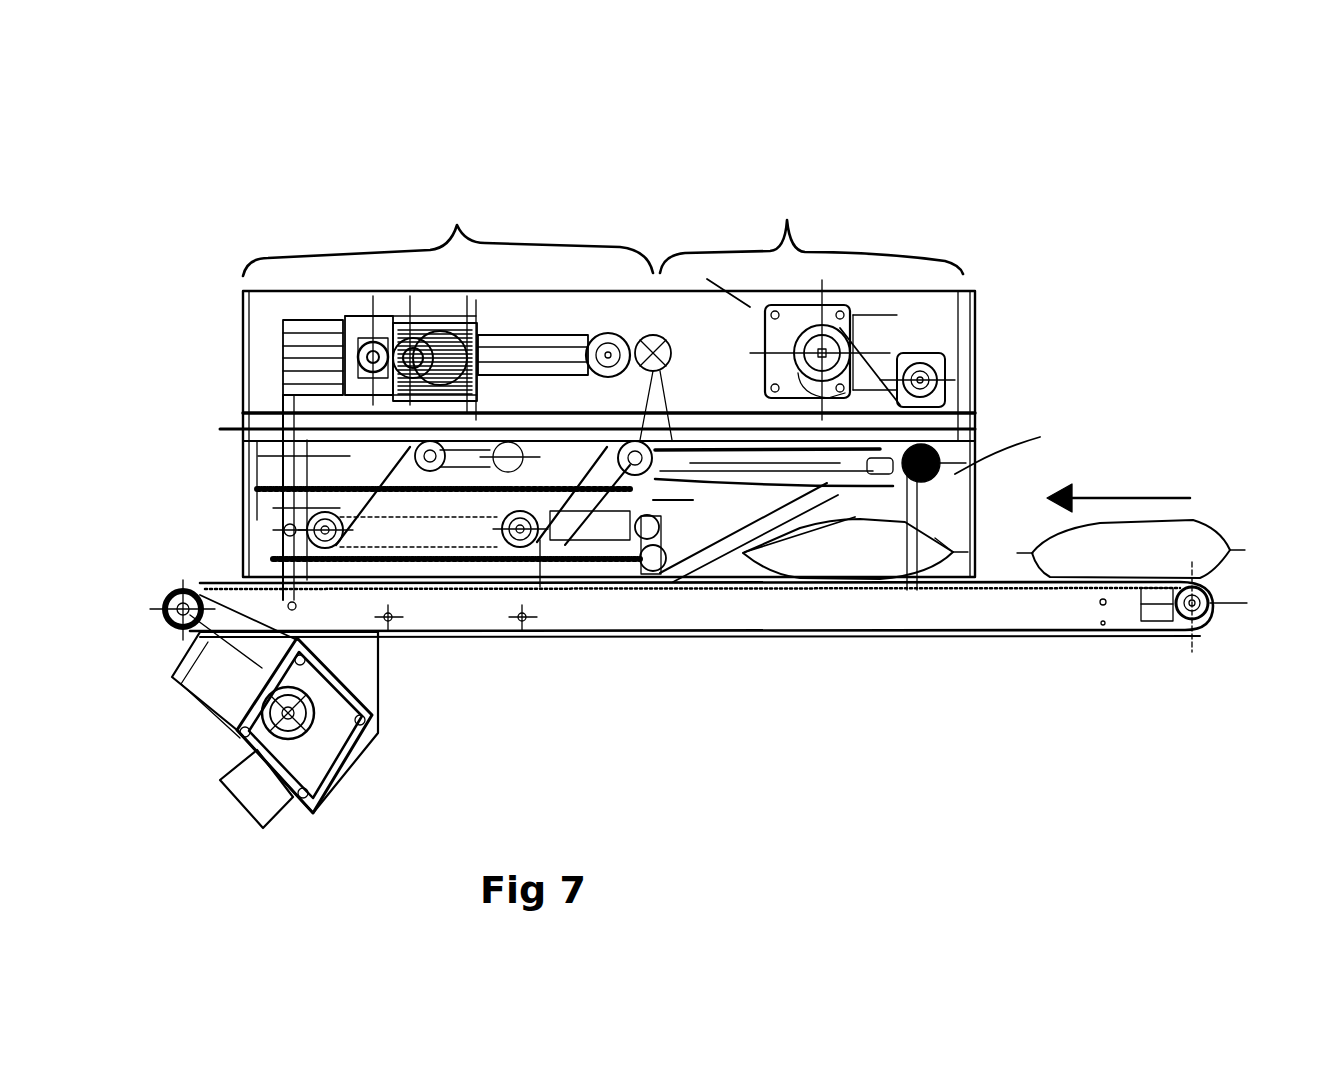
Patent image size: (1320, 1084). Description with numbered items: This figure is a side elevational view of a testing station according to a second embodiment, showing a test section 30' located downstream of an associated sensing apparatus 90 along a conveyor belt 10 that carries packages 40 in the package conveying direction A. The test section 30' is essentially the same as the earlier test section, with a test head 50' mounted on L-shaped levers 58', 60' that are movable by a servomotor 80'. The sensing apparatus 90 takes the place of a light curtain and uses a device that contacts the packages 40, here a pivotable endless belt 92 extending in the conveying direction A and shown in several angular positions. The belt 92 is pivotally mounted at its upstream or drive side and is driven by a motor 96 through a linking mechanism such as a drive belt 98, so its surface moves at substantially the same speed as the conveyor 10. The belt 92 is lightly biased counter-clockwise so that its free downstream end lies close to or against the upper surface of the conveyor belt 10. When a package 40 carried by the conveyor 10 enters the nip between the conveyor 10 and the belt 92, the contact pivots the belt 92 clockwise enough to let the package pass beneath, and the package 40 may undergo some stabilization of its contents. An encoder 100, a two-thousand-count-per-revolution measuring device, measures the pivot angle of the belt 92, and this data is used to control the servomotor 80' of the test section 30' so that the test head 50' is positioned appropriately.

The conveyor belt 10 is at (992, 590).
The test section 30' is at (457, 393).
The package 40 is at (1230, 552).
The test head 50' is at (461, 600).
The L-shaped lever 58' is at (396, 610).
The L-shaped lever 60' is at (523, 609).
The servomotor 80' is at (283, 355).
The sensing apparatus 90 is at (811, 223).
The pivotable endless belt 92 is at (827, 483).
The motor 96 is at (787, 302).
The drive belt 98 is at (898, 352).
The encoder 100 is at (958, 345).
The package conveying direction A is at (1122, 498).